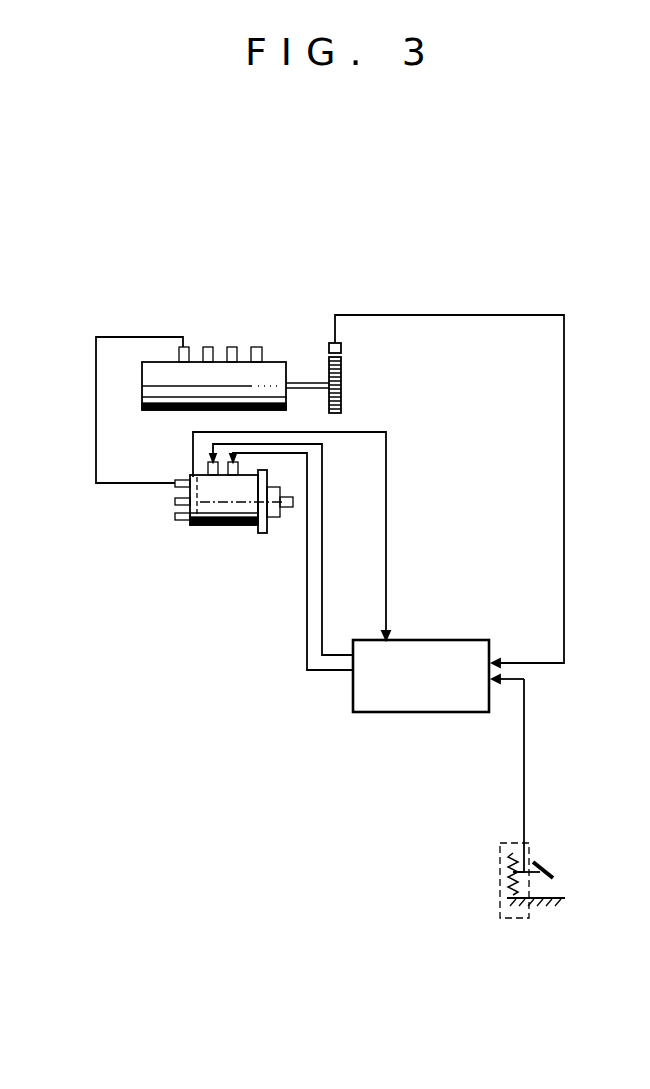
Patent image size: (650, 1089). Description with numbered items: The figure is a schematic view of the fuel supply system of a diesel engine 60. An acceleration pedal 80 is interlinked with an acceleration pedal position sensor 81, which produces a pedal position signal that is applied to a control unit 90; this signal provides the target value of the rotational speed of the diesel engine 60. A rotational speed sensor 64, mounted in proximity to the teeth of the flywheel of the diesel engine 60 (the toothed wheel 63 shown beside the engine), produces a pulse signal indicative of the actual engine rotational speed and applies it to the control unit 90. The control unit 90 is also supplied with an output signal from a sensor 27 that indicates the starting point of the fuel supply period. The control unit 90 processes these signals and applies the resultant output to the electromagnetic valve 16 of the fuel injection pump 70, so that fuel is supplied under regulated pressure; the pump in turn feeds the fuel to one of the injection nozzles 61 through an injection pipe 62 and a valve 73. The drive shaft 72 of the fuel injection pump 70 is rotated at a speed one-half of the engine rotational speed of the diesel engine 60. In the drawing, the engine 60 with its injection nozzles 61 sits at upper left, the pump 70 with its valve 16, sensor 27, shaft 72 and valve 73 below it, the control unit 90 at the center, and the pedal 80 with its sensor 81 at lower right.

The diesel engine 60 is at (160, 404).
The injection nozzles 61 is at (256, 347).
The injection pipe 62 is at (95, 459).
The gear 63 is at (341, 368).
The rotational speed sensor 64 is at (341, 349).
The electromagnetic valve 16 is at (207, 470).
The fuel injection pump 70 is at (231, 525).
The sensor 27 is at (195, 524).
The drive shaft 72 is at (287, 510).
The valve 73 is at (175, 486).
The control unit 90 is at (437, 700).
The acceleration pedal position sensor 81 is at (505, 843).
The acceleration pedal 80 is at (548, 867).